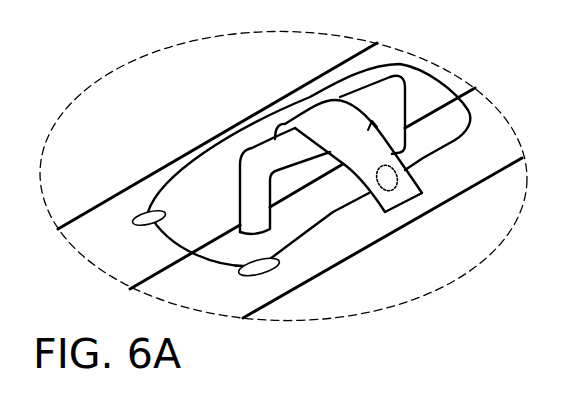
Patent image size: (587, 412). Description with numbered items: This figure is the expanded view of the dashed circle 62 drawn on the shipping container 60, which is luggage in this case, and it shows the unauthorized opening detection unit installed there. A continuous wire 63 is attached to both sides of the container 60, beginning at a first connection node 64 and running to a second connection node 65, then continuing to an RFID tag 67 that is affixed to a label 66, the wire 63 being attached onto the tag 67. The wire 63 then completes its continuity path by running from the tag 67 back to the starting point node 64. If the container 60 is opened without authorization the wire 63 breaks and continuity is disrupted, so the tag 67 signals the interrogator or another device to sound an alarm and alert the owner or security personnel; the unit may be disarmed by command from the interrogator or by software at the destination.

The shipping container 60 is at (399, 275).
The dashed circle 62 is at (115, 72).
The continuous wire 63 is at (430, 79).
The first connection node 64 is at (138, 215).
The second connection node 65 is at (262, 269).
The label 66 is at (320, 125).
The RFID tag 67 is at (390, 184).